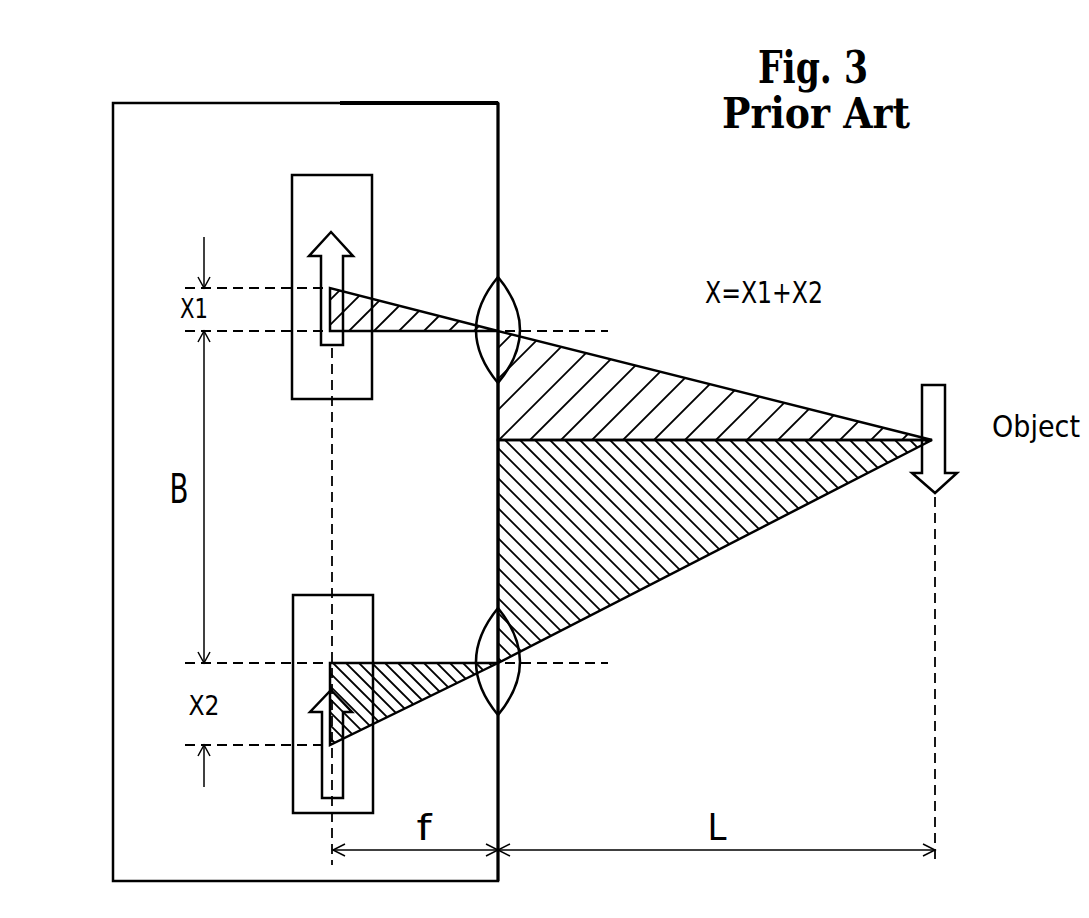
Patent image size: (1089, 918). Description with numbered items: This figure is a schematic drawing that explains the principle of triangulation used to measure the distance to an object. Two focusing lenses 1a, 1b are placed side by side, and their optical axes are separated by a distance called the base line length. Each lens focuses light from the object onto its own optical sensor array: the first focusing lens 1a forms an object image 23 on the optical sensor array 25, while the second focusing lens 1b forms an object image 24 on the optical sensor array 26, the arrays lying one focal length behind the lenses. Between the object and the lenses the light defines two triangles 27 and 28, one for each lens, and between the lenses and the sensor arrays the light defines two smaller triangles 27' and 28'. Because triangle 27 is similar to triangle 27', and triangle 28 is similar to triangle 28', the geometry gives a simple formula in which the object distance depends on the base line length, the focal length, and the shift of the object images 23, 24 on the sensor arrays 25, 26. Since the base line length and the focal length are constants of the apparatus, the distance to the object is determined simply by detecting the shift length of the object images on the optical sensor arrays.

The focusing lens 1a is at (505, 298).
The focusing lens 1b is at (522, 685).
The object image 23 is at (318, 237).
The object image 24 is at (323, 765).
The optical sensor array 25 is at (374, 383).
The optical sensor array 26 is at (374, 611).
The triangle 27 is at (708, 385).
The triangle 27' is at (408, 281).
The triangle 28 is at (684, 551).
The triangle 28' is at (413, 710).